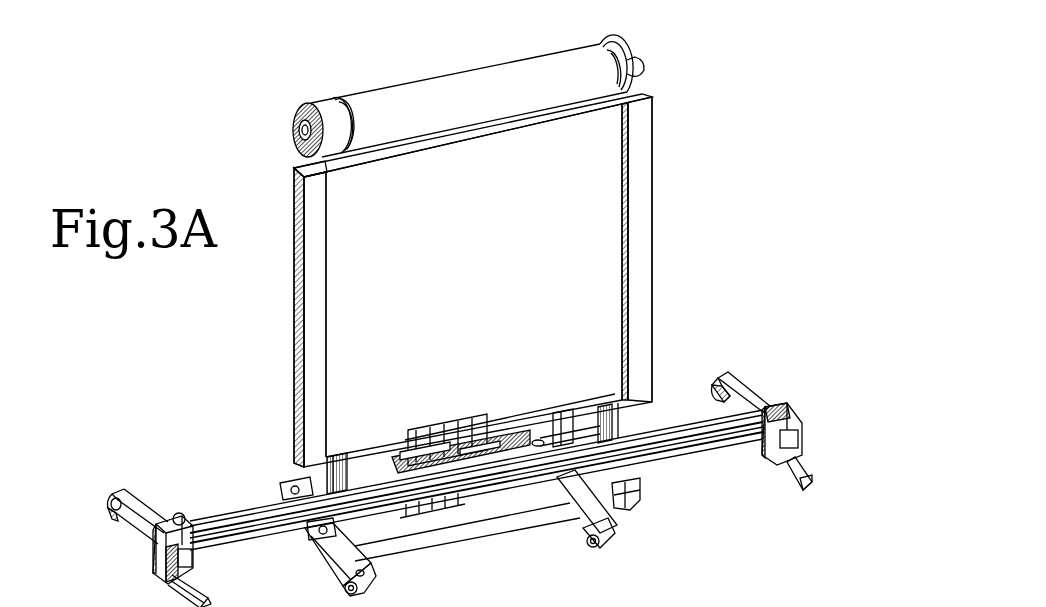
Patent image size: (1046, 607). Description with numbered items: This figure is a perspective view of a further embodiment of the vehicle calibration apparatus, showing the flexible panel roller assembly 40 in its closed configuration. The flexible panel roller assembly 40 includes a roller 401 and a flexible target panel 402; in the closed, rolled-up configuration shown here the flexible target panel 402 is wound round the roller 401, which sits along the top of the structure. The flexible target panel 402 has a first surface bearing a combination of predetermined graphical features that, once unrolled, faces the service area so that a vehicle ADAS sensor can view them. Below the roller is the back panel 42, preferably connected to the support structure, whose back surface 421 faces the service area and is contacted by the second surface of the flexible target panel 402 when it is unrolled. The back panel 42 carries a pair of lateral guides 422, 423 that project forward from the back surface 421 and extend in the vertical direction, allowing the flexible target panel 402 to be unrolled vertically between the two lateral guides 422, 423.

The flexible panel roller assembly 40 is at (265, 158).
The roller 401 is at (297, 130).
The flexible target panel 402 is at (448, 95).
The back panel 42 is at (568, 232).
The back surface 421 is at (450, 322).
The lateral guide 422 is at (308, 468).
The lateral guide 423 is at (642, 373).